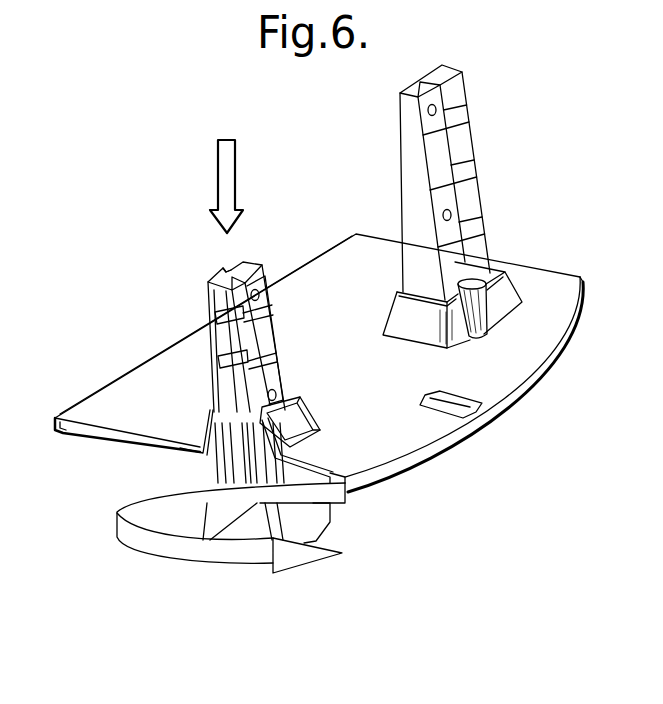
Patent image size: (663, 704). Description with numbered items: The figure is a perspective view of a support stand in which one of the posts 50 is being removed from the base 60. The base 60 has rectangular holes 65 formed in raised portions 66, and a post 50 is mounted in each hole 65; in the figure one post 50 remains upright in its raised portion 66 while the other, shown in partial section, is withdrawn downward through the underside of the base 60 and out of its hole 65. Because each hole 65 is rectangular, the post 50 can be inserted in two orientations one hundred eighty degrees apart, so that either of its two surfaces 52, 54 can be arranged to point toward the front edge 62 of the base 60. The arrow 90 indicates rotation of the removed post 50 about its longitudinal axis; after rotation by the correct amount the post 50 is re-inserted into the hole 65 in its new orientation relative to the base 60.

The post 50 is at (473, 193).
The surface of the post 52 is at (200, 282).
The surface of the post 54 is at (278, 320).
The base 60 is at (510, 353).
The front edge of the base 62 is at (102, 386).
The hole 65 is at (210, 453).
The raised portion 66 is at (297, 422).
The arrow indicating rotation 90 is at (205, 557).